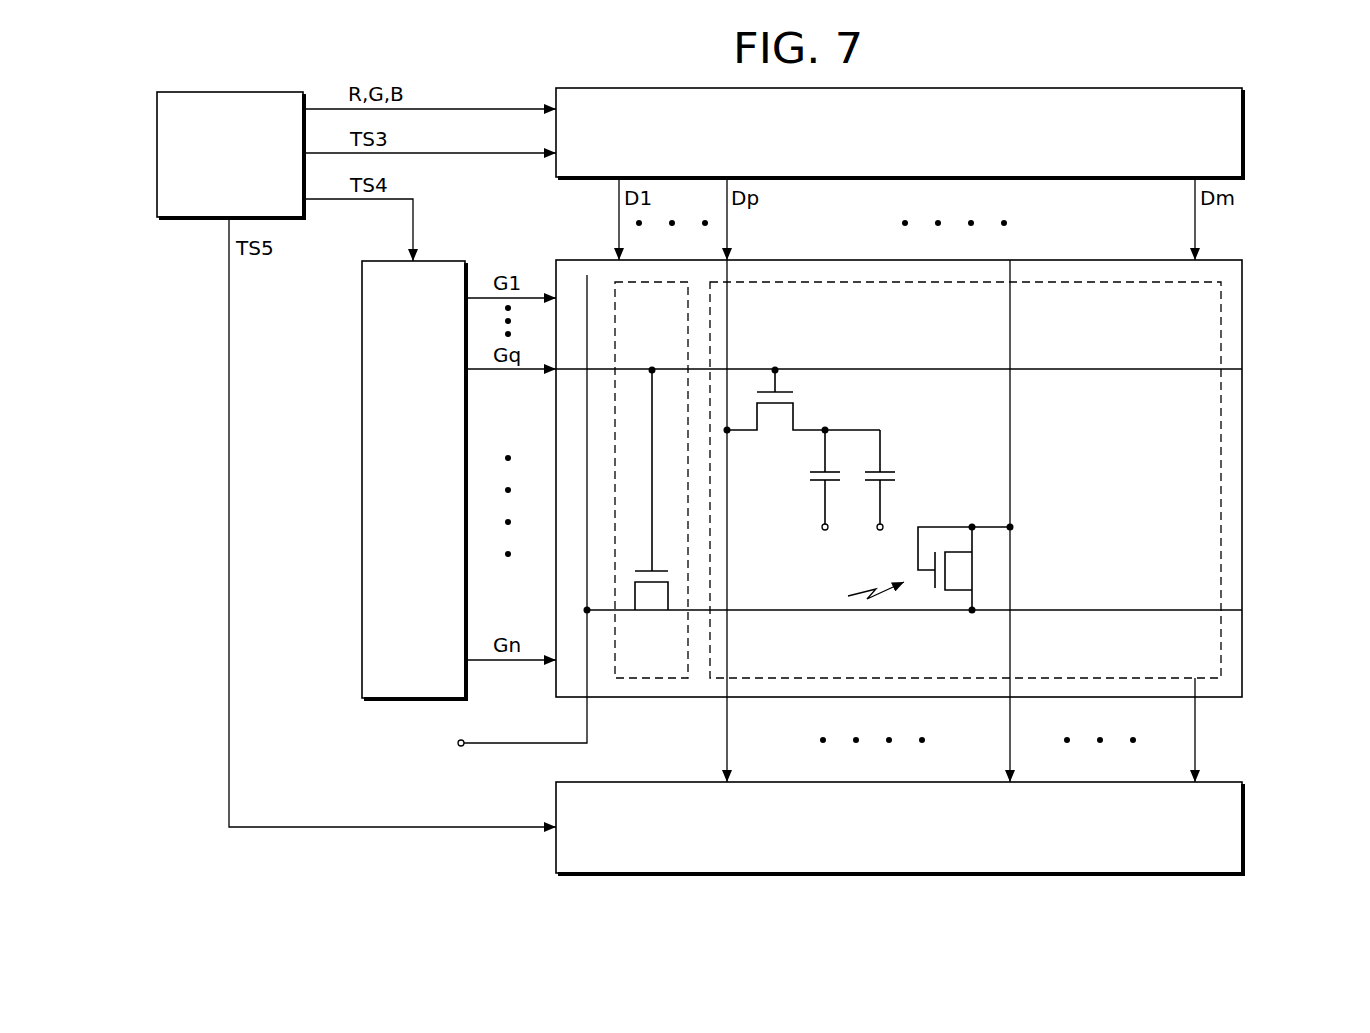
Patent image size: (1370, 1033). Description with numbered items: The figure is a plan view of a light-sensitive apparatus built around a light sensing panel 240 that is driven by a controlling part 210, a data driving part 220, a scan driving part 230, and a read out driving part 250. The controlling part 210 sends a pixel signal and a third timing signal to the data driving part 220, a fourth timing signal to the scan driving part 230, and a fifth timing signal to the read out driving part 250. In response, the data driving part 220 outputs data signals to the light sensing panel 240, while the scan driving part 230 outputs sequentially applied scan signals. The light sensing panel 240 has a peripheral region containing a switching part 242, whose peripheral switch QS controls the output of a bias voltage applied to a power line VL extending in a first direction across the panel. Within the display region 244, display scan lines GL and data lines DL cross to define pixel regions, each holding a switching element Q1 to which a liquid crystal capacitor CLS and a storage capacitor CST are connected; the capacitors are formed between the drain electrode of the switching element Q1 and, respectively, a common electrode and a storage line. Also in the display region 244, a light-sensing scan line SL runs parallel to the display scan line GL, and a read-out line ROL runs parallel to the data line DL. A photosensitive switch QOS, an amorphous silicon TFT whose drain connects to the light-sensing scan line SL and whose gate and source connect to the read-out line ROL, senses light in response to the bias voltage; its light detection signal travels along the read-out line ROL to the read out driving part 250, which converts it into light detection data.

The controlling part 210 is at (247, 92).
The data driving part 220 is at (1245, 137).
The scan driving part 230 is at (362, 306).
The light sensing panel 240 is at (1244, 565).
The switching part 242 is at (651, 514).
The display region 244 is at (1222, 650).
The read out driving part 250 is at (1245, 829).
The display scan line GL is at (1151, 369).
The data line DL is at (729, 328).
The light-sensing scan line SL is at (1148, 609).
The power line VL is at (586, 296).
The read-out line ROL is at (1012, 330).
The peripheral switch QS is at (651, 503).
The switching element Q1 is at (802, 400).
The photosensitive switch QOS is at (987, 569).
The liquid crystal capacitor CLS is at (818, 493).
The storage capacitor CST is at (894, 493).